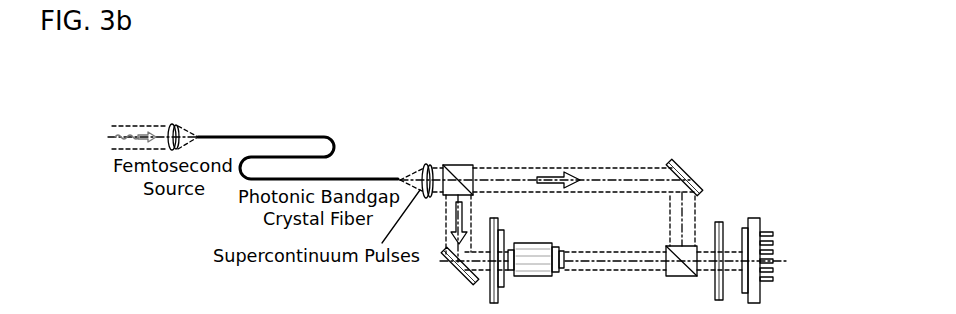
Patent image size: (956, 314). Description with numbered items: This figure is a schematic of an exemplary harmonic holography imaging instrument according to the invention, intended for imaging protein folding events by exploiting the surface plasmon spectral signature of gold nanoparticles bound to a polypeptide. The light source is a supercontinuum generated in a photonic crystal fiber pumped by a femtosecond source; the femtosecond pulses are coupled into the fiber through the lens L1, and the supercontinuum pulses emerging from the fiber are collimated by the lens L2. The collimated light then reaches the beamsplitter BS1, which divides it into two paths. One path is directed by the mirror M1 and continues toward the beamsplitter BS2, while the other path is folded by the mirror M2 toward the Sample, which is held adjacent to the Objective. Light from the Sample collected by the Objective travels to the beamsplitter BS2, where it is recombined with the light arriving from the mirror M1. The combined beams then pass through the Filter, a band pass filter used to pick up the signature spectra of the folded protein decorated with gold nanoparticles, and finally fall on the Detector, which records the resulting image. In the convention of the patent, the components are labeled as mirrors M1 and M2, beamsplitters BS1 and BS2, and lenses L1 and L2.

The lens L1 is at (174, 128).
The lens L2 is at (426, 172).
The beamsplitter BS1 is at (461, 170).
The beamsplitter BS2 is at (684, 272).
The mirror M1 is at (689, 177).
The mirror M2 is at (453, 269).
The band pass filter Filter is at (720, 222).
The detector Detector is at (757, 222).
The sample Sample is at (499, 230).
The objective Objective is at (552, 272).